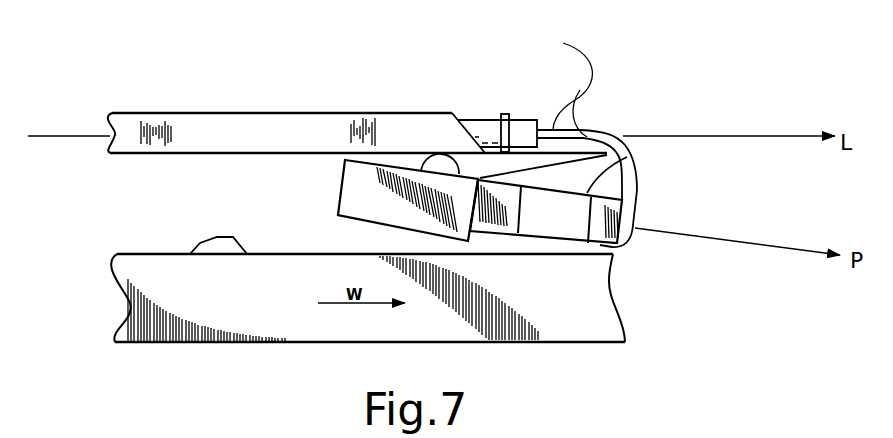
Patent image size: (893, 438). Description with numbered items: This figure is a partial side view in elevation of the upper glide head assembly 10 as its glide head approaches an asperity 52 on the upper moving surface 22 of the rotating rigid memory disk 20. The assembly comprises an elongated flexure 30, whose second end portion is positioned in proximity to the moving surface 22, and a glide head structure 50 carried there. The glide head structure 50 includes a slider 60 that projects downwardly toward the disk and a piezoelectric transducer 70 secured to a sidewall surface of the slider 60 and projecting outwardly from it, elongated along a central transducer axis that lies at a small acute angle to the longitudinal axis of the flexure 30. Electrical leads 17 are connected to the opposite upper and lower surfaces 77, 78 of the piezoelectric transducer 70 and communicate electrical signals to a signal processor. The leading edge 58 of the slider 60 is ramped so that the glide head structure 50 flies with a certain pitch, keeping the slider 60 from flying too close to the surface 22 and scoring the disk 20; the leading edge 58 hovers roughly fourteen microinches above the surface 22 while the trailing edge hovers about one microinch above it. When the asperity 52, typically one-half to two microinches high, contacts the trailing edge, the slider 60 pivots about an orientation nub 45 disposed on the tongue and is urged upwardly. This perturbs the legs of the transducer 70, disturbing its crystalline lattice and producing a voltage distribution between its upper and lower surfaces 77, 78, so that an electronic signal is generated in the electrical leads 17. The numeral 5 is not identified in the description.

The applicator head 5 is at (475, 232).
The upper glide head assembly 10 is at (86, 112).
The electrical leads 17 is at (563, 83).
The rigid memory disk 20 is at (222, 310).
The upper moving surface 22 is at (133, 253).
The elongated flexure 30 is at (207, 130).
The orientation nub 45 is at (442, 163).
The glide head structure 50 is at (655, 87).
The asperity 52 is at (220, 242).
The leading edge 58 is at (340, 185).
The slider 60 is at (392, 196).
The piezoelectric transducer 70 is at (633, 193).
The upper surface 77 is at (637, 158).
The lower surface 78 is at (570, 243).